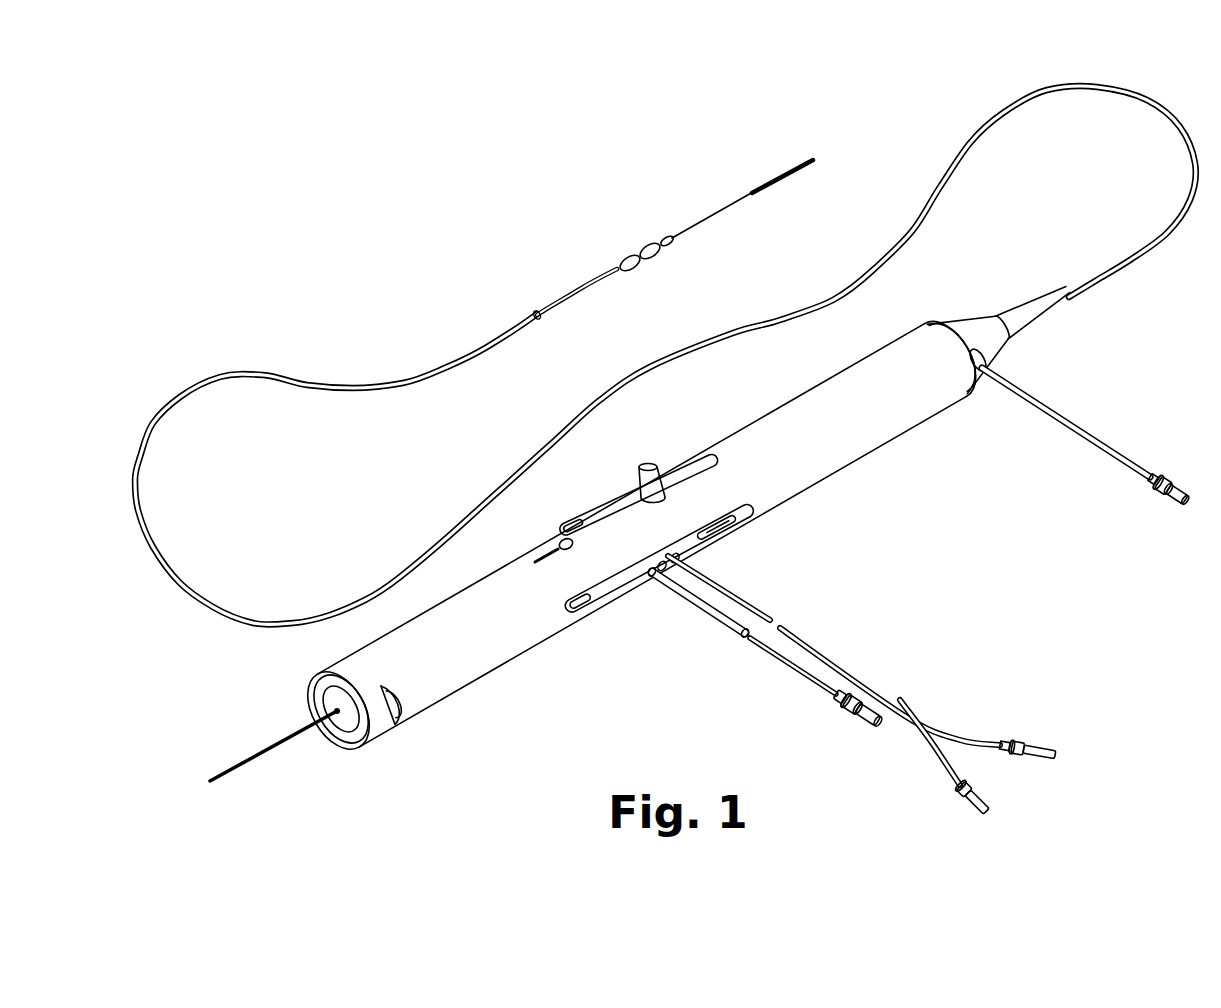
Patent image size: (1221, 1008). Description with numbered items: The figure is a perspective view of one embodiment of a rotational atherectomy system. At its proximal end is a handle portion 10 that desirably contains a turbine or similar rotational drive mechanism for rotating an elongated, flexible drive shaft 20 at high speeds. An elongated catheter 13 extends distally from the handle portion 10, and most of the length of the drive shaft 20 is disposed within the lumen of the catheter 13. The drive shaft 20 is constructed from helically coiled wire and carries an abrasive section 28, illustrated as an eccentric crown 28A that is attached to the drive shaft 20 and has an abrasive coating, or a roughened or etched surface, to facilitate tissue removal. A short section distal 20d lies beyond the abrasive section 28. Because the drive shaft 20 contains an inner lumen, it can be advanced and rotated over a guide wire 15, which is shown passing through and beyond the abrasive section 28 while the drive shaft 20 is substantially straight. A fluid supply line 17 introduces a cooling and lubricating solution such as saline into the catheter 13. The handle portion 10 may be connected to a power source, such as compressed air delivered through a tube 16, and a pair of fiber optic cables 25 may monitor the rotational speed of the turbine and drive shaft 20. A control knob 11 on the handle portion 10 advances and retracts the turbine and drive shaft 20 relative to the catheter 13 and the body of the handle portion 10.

The handle portion 10 is at (806, 415).
The control knob 11 is at (650, 464).
The catheter 13 is at (970, 140).
The guide wire 15 is at (720, 217).
The tube 16 is at (723, 626).
The fluid supply line 17 is at (1071, 424).
The drive shaft 20 is at (555, 270).
The short section distal to the abrasive section 20d is at (667, 238).
The fiber optic cables 25 is at (744, 608).
The abrasive section 28 is at (615, 248).
The eccentric crown 28A is at (640, 267).